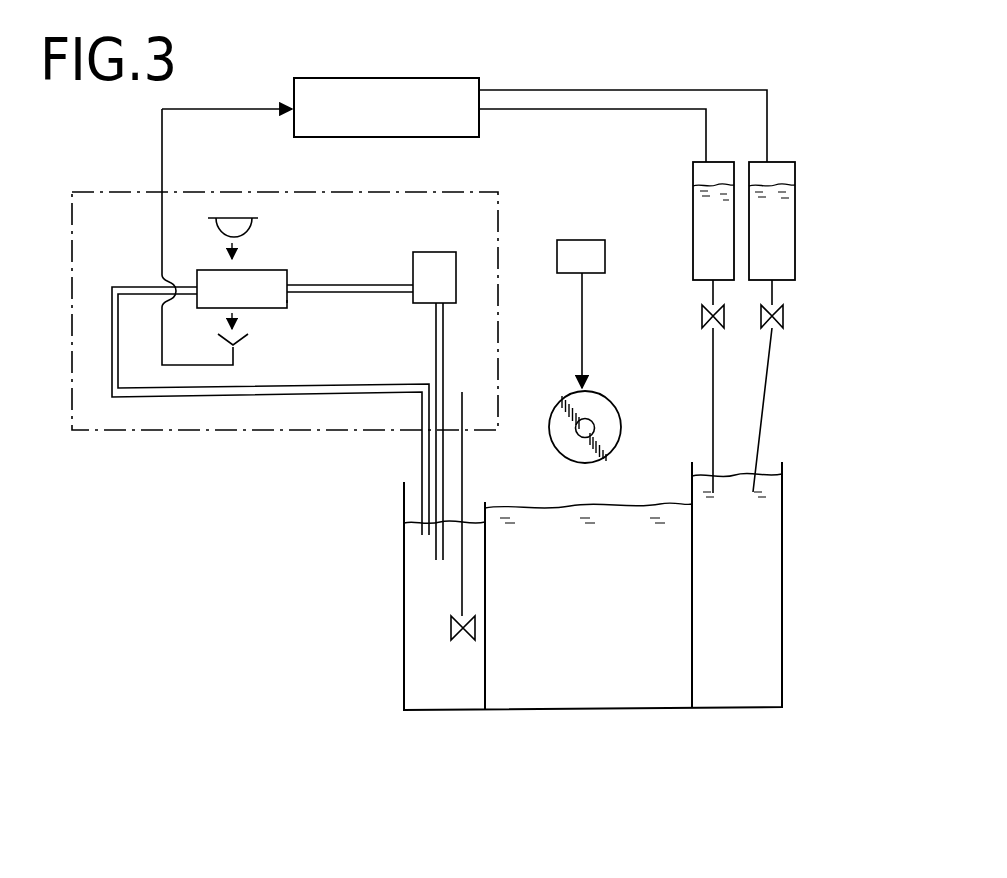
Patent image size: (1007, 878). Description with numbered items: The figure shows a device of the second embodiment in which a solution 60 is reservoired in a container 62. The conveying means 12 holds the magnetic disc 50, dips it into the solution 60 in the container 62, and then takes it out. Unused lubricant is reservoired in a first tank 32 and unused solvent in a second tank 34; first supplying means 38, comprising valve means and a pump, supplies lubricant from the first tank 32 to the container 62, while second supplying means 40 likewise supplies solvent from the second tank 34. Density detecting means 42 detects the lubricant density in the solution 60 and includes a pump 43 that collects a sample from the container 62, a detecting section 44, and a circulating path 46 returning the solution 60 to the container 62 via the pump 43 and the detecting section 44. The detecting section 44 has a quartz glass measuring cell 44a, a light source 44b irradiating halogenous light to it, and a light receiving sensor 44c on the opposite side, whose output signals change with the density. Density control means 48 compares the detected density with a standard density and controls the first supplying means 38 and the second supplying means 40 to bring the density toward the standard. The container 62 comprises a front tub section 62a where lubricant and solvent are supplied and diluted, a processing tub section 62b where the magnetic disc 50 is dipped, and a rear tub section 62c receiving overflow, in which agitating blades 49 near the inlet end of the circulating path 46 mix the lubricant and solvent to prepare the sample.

The conveying means 12 is at (573, 240).
The first tank 32 is at (693, 207).
The second tank 34 is at (795, 212).
The first supplying means 38 is at (702, 313).
The second supplying means 40 is at (724, 316).
The density detecting means 42 is at (101, 192).
The pump 43 is at (422, 252).
The detecting section 44 is at (296, 258).
The measuring cell 44a is at (284, 306).
The light source 44b is at (243, 218).
The light receiving sensor 44c is at (246, 336).
The circulating path 46 is at (383, 386).
The density control means 48 is at (425, 78).
The agitating blades 49 is at (451, 628).
The magnetic disc 50 is at (618, 413).
The solution 60 is at (607, 640).
The container 62 is at (782, 622).
The front tub section 62a is at (746, 700).
The processing tub section 62b is at (600, 708).
The rear tub section 62c is at (458, 708).